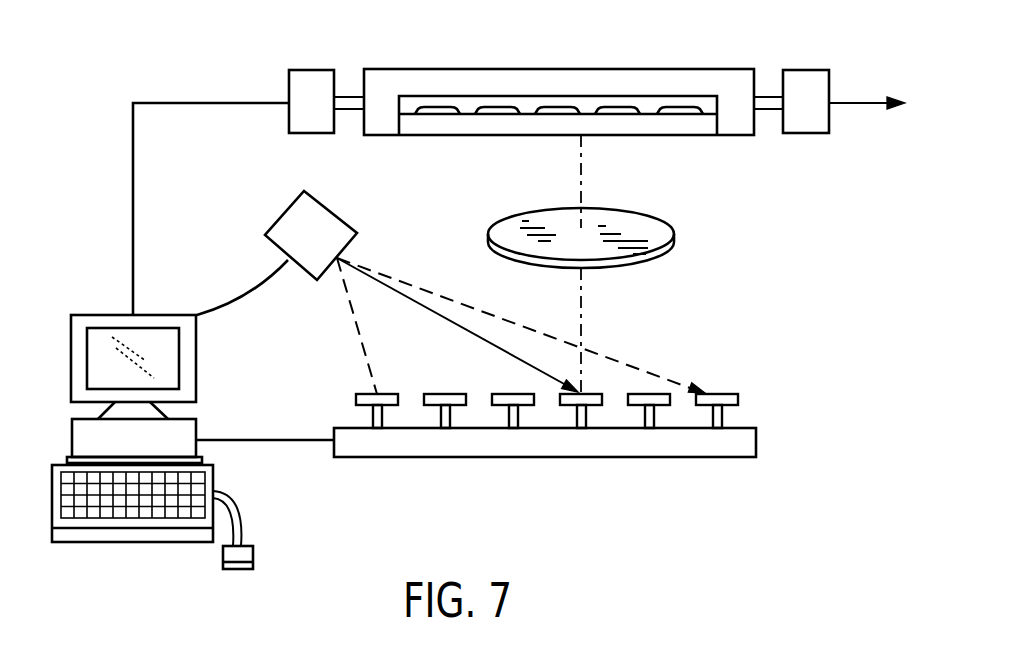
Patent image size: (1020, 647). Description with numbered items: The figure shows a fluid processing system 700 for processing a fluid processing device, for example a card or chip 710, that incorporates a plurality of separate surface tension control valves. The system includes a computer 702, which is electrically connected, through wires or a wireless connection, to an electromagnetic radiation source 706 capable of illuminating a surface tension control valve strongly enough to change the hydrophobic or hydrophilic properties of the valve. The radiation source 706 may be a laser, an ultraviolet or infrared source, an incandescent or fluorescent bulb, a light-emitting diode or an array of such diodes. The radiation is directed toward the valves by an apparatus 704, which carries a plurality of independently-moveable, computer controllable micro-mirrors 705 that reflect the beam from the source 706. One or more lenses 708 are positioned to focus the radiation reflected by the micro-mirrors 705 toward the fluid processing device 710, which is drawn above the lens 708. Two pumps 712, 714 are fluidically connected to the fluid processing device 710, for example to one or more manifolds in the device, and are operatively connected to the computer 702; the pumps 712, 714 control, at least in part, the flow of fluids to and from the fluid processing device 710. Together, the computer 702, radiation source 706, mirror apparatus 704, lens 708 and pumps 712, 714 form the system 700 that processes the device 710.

The fluid processing system 700 is at (478, 287).
The computer 702 is at (186, 430).
The apparatus 704 is at (756, 440).
The micro-mirrors 705 is at (730, 394).
The electromagnetic radiation source 706 is at (341, 218).
The lens 708 is at (663, 232).
The fluid processing device 710 is at (613, 85).
The pump 712 is at (320, 82).
The pump 714 is at (807, 70).